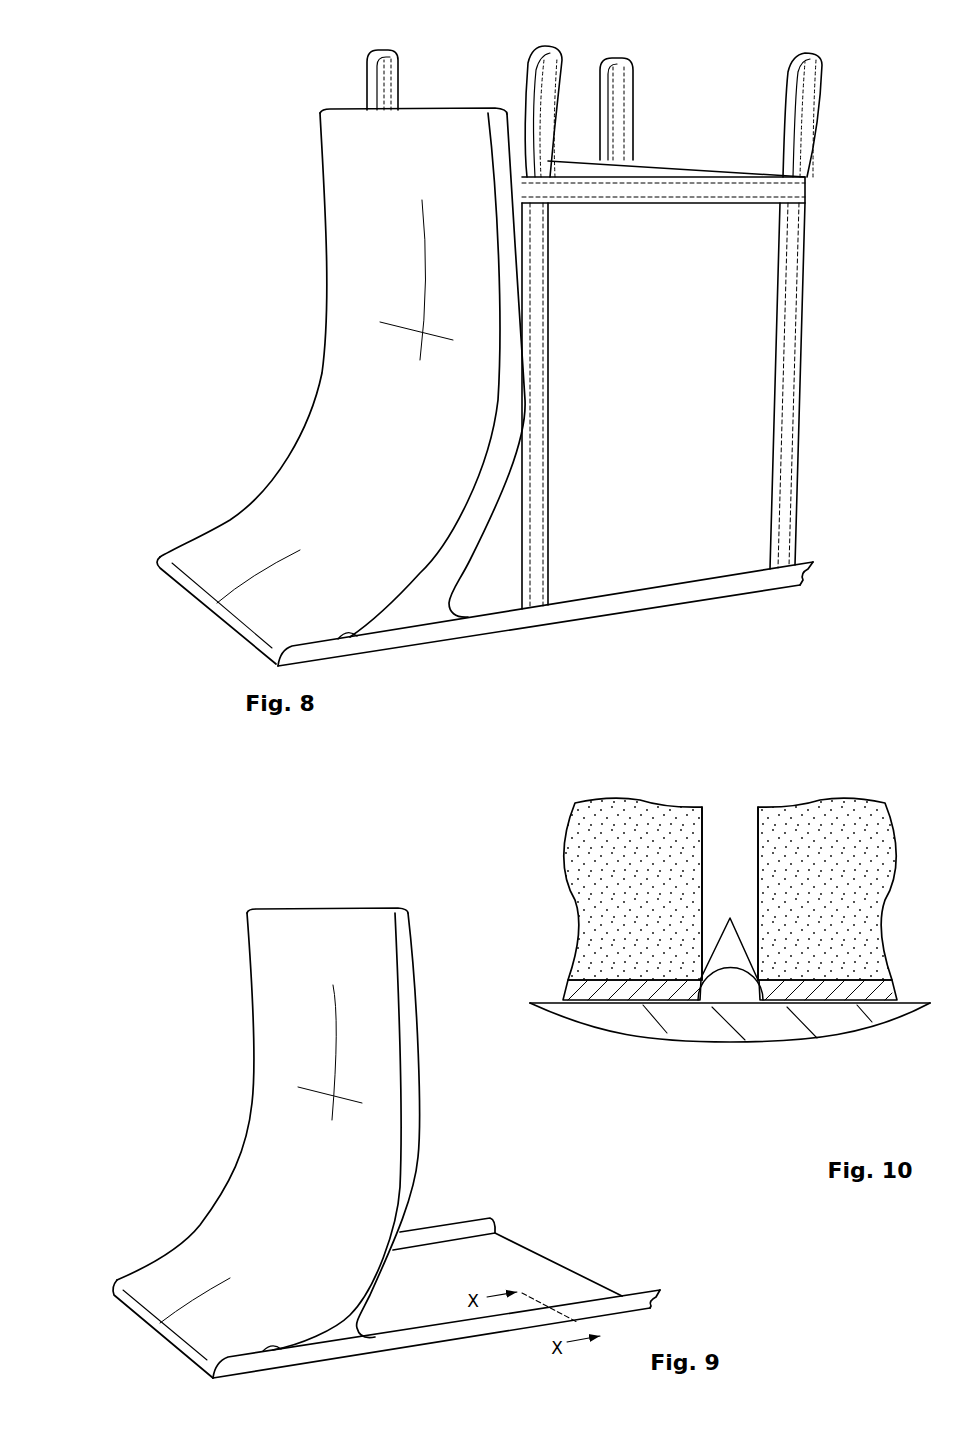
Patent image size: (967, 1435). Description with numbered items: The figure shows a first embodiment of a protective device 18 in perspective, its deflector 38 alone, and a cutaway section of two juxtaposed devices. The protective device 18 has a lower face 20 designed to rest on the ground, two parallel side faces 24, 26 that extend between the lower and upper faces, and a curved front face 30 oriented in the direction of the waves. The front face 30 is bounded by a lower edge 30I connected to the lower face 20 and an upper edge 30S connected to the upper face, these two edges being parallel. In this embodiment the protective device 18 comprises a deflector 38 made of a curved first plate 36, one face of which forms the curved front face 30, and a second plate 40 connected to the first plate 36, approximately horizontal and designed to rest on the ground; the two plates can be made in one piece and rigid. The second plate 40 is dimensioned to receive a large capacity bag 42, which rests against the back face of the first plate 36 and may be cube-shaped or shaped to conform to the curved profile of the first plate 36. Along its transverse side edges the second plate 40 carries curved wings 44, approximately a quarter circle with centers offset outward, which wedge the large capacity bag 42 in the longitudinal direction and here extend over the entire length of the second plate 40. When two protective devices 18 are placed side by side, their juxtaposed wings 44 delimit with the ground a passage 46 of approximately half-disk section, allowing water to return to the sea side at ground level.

In FIG. 8, the protective device 18 is at (300, 82).
In FIG. 10, the protective device 18 is at (620, 773).
In FIG. 10, the lower face 20 is at (567, 980).
In FIG. 10, the side face 24 is at (750, 833).
In FIG. 8, the side face 26 is at (753, 341).
In FIG. 10, the side face 26 is at (710, 833).
In FIG. 8, the front face 30 is at (335, 372).
In FIG. 9, the front face 30 is at (233, 1207).
In FIG. 8, the upper edge 30S is at (418, 120).
In FIG. 9, the upper edge 30S is at (312, 917).
In FIG. 8, the lower edge 30I is at (215, 603).
In FIG. 9, the lower edge 30I is at (158, 1325).
In FIG. 8, the first plate 36 is at (300, 460).
In FIG. 9, the first plate 36 is at (270, 1020).
In FIG. 9, the deflector 38 is at (200, 1058).
In FIG. 8, the second plate 40 is at (553, 613).
In FIG. 9, the second plate 40 is at (437, 1270).
In FIG. 10, the second plate 40 is at (652, 992).
In FIG. 8, the large capacity bag 42 is at (745, 250).
In FIG. 10, the large capacity bag 42 is at (618, 817).
In FIG. 8, the curved wings 44 is at (797, 563).
In FIG. 9, the curved wings 44 is at (475, 1218).
In FIG. 10, the curved wings 44 is at (730, 949).
In FIG. 10, the passage 46 is at (738, 992).